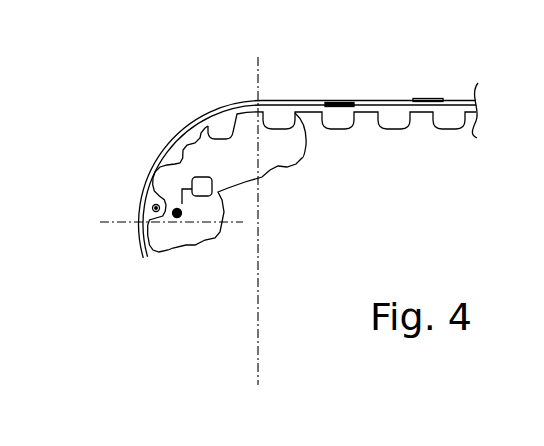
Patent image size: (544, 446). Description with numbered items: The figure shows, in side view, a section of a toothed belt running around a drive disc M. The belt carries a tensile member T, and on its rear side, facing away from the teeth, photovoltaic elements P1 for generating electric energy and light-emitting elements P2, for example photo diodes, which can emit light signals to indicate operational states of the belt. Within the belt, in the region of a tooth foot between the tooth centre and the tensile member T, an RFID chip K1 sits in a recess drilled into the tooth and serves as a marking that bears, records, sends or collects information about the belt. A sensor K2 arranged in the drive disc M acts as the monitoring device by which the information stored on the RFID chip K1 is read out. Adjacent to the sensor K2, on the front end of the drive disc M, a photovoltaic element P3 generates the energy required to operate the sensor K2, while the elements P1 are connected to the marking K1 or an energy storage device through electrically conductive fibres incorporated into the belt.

The tensile member T is at (200, 117).
The drive disc M is at (214, 215).
The photovoltaic element P3 is at (200, 185).
The RFID chip K1 is at (156, 208).
The sensor K2 is at (177, 217).
The light-emitting element P2 is at (338, 102).
The photovoltaic element P1 is at (432, 99).